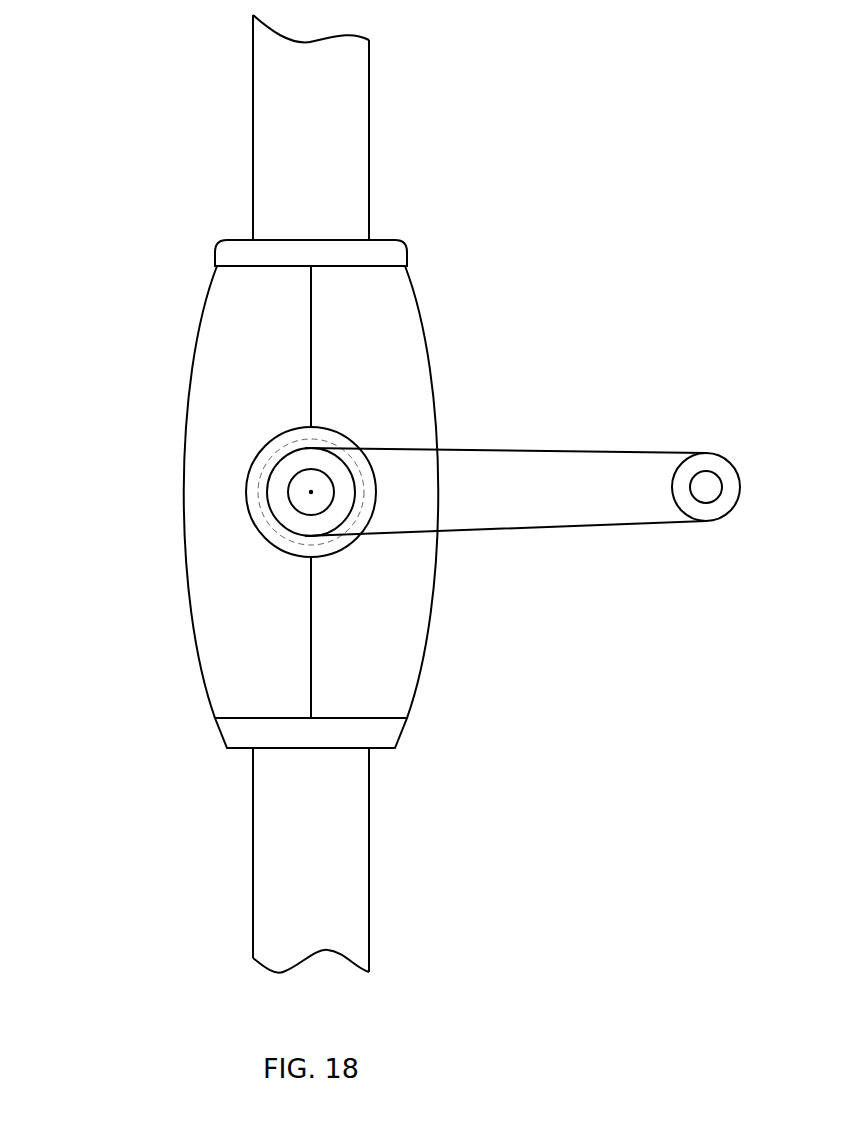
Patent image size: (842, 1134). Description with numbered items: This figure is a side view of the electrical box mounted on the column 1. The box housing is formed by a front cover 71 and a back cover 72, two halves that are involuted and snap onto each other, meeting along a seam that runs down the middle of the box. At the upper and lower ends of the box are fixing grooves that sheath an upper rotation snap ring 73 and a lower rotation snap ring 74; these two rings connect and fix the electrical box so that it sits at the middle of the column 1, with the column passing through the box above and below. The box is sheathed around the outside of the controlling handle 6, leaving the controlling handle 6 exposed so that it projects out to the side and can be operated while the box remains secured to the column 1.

The column 1 is at (328, 127).
The upper rotation snap ring 73 is at (367, 256).
The back cover 72 is at (410, 323).
The front cover 71 is at (207, 393).
The lower rotation snap ring 74 is at (388, 732).
The controlling handle 6 is at (710, 486).